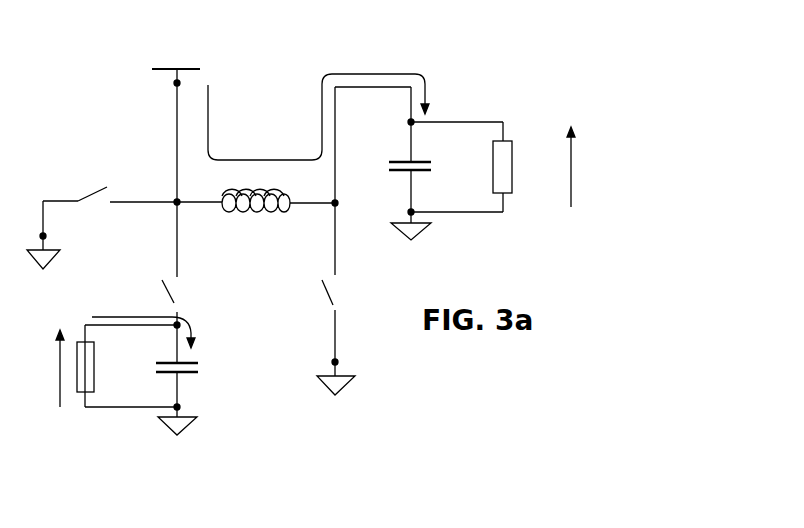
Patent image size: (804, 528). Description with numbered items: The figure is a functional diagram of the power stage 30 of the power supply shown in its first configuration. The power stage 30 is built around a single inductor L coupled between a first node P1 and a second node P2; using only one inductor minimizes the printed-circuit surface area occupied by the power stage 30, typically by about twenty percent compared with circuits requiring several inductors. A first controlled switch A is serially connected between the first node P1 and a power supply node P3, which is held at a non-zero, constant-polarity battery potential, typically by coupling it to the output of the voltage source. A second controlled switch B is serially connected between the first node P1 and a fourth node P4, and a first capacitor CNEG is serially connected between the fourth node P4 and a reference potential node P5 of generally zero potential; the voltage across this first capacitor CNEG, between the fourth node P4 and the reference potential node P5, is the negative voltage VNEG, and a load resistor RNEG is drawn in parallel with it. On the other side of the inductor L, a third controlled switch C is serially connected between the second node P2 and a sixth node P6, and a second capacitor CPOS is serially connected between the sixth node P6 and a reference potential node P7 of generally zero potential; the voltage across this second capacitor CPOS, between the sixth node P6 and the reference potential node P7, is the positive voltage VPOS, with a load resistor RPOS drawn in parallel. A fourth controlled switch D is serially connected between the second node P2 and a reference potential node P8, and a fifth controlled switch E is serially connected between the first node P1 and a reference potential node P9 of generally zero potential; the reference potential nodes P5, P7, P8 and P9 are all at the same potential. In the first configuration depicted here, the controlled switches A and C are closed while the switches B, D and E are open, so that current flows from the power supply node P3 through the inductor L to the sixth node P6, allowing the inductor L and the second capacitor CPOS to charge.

The power stage 30 is at (609, 48).
The first controlled switch A is at (187, 173).
The second controlled switch B is at (178, 292).
The third controlled switch C is at (373, 181).
The fourth controlled switch D is at (337, 292).
The fifth controlled switch E is at (75, 205).
The inductor L is at (278, 190).
The first node P1 is at (166, 214).
The second node P2 is at (347, 206).
The power supply node P3 is at (164, 85).
The fourth node P4 is at (193, 318).
The reference potential node P5 is at (181, 416).
The sixth node P6 is at (398, 122).
The reference potential node P7 is at (407, 220).
The reference potential node P8 is at (339, 352).
The reference potential node P9 is at (38, 235).
The second capacitor CPOS is at (432, 169).
The positive load resistor RPOS is at (483, 167).
The positive voltage VPOS is at (590, 167).
The first capacitor CNEG is at (199, 368).
The negative load resistor RNEG is at (127, 366).
The negative voltage VNEG is at (37, 368).